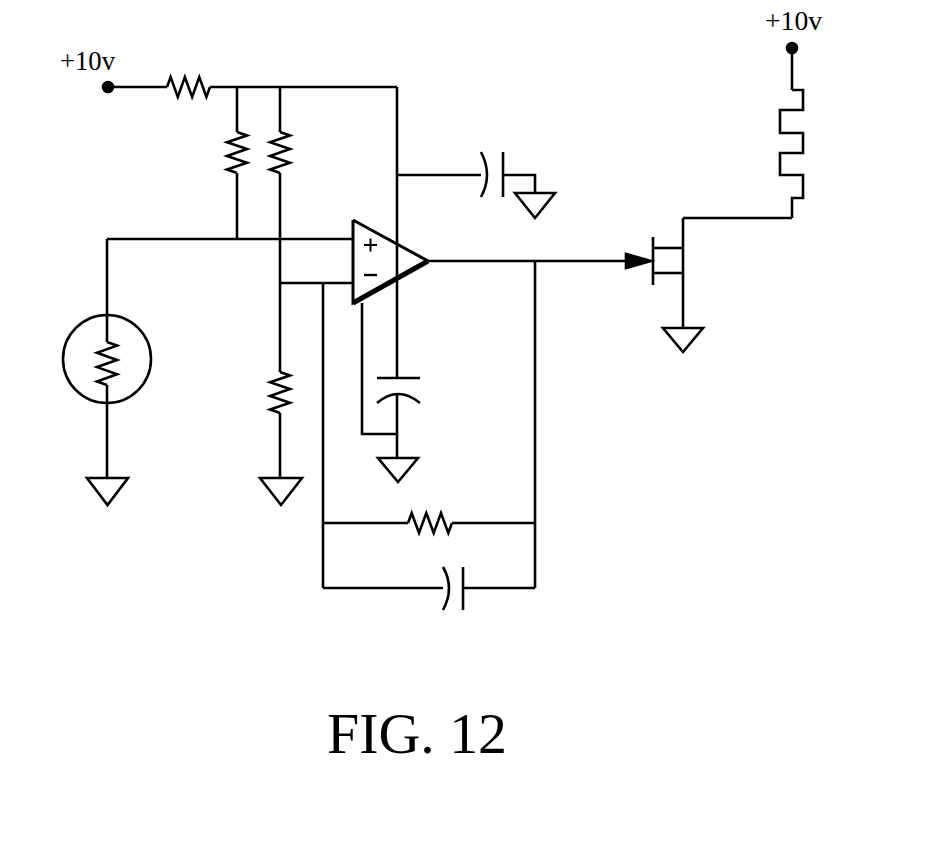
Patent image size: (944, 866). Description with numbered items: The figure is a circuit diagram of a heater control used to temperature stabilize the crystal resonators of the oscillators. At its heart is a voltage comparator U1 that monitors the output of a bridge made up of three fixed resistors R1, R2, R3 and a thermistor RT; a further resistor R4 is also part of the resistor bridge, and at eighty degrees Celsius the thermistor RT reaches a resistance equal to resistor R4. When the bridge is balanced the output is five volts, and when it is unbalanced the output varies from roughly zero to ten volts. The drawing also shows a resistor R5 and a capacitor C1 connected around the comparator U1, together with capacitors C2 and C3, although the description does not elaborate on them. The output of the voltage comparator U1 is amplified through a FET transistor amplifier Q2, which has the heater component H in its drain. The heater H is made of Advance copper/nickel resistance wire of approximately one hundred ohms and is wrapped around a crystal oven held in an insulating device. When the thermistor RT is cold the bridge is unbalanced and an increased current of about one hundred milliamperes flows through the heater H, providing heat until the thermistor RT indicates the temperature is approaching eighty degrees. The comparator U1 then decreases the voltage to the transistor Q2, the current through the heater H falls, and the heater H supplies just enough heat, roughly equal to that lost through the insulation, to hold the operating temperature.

The fixed resistor R1 is at (188, 71).
The fixed resistor R2 is at (217, 152).
The fixed resistor R3 is at (298, 152).
The resistor R4 is at (261, 392).
The feedback resistor R5 is at (436, 509).
The feedback capacitor C1 is at (455, 611).
The capacitor C2 is at (417, 393).
The supply bypass capacitor C3 is at (492, 155).
The voltage comparator U1 is at (397, 261).
The thermistor RT is at (121, 356).
The FET transistor amplifier Q2 is at (678, 273).
The heater component H is at (807, 154).